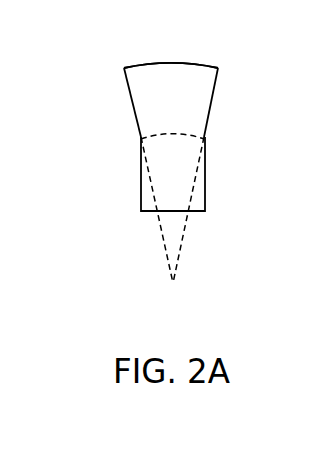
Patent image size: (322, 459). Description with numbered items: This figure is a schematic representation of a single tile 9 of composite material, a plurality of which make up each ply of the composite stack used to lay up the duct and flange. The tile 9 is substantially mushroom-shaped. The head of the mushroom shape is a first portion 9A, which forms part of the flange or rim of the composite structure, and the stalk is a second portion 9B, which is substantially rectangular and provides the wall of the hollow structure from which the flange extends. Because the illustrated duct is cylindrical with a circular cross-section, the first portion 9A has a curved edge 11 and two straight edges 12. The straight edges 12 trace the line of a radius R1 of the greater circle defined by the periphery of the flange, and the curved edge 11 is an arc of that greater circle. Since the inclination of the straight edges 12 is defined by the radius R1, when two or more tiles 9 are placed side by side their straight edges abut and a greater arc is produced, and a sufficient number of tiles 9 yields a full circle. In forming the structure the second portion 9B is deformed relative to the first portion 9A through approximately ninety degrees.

The tile 9 is at (179, 149).
The first portion 9A is at (171, 88).
The second portion 9B is at (173, 172).
The curved edge 11 is at (173, 62).
The straight edges 12 is at (132, 105).
The radius R1 is at (162, 232).